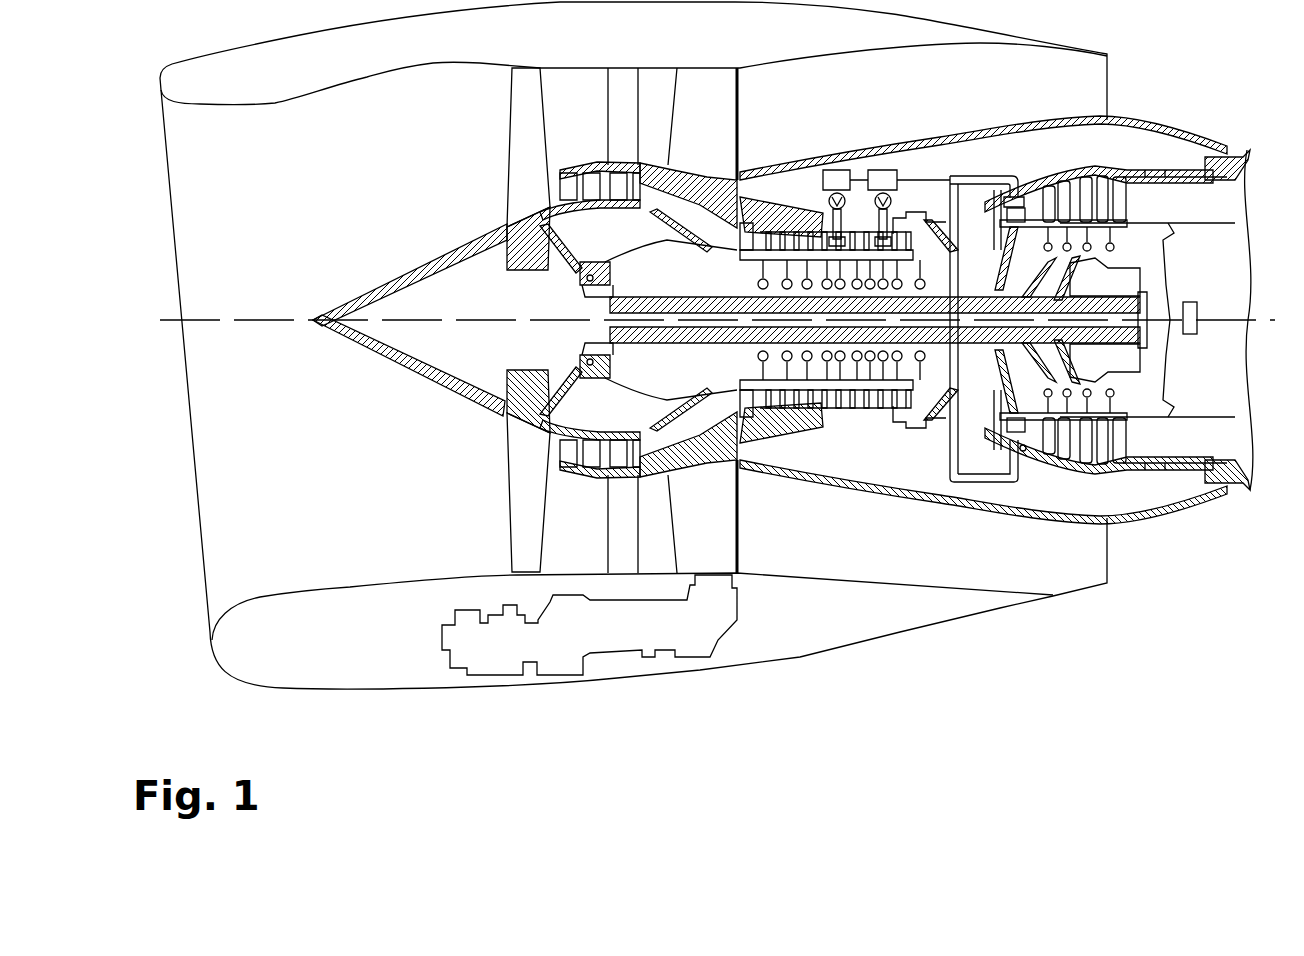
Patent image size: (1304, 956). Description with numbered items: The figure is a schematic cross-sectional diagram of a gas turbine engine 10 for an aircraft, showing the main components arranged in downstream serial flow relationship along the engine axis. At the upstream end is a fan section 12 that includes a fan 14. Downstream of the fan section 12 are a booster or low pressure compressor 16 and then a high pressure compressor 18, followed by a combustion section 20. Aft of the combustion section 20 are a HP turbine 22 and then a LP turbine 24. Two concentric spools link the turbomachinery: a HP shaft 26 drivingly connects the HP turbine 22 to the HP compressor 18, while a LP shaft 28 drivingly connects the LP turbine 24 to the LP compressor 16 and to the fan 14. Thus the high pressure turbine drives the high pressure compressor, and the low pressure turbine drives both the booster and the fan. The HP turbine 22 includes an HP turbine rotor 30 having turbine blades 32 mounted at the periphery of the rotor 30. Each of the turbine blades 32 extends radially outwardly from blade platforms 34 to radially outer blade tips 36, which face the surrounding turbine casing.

The gas turbine engine 10 is at (483, 460).
The fan section 12 is at (545, 47).
The fan 14 is at (515, 135).
The low pressure compressor 16 is at (584, 138).
The high pressure compressor 18 is at (803, 240).
The combustion section 20 is at (968, 427).
The HP turbine 22 is at (1023, 451).
The LP turbine 24 is at (1083, 172).
The HP shaft 26 is at (952, 360).
The LP shaft 28 is at (950, 300).
The HP turbine rotor 30 is at (1025, 257).
The turbine blades 32 is at (1010, 210).
The blade platforms 34 is at (1005, 247).
The blade tips 36 is at (1022, 215).